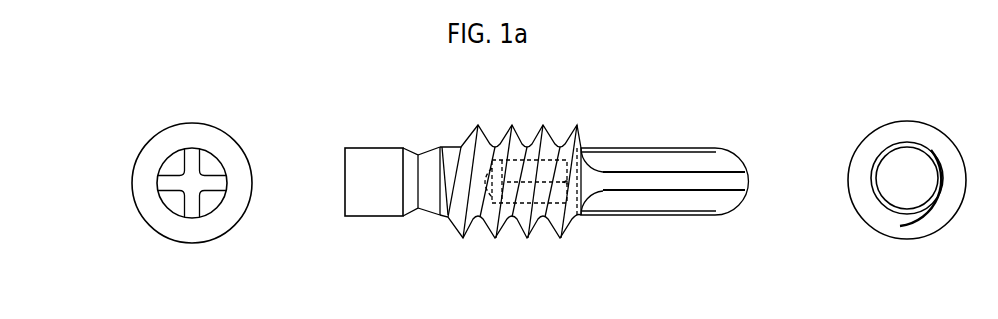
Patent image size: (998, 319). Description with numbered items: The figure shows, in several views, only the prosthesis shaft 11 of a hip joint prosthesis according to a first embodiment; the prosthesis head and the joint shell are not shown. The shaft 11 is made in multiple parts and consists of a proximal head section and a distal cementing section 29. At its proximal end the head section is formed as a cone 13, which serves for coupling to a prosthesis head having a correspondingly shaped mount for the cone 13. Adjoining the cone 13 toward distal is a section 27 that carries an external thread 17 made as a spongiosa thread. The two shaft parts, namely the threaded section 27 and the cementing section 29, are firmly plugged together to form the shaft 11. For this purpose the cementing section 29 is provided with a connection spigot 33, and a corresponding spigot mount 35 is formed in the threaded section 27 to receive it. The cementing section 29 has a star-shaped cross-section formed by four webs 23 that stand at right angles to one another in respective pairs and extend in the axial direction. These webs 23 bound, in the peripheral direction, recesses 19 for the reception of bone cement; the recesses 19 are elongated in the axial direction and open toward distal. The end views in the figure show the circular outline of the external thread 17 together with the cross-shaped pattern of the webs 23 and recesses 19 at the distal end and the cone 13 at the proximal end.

The prosthesis shaft 11 is at (554, 90).
The cone 13 is at (372, 158).
The external thread 17 is at (149, 150).
The recesses 19 is at (172, 160).
The webs 23 is at (193, 157).
The threaded section 27 is at (509, 116).
The distal cementing section 29 is at (702, 143).
The connection spigot 33 is at (543, 200).
The spigot mount 35 is at (503, 204).